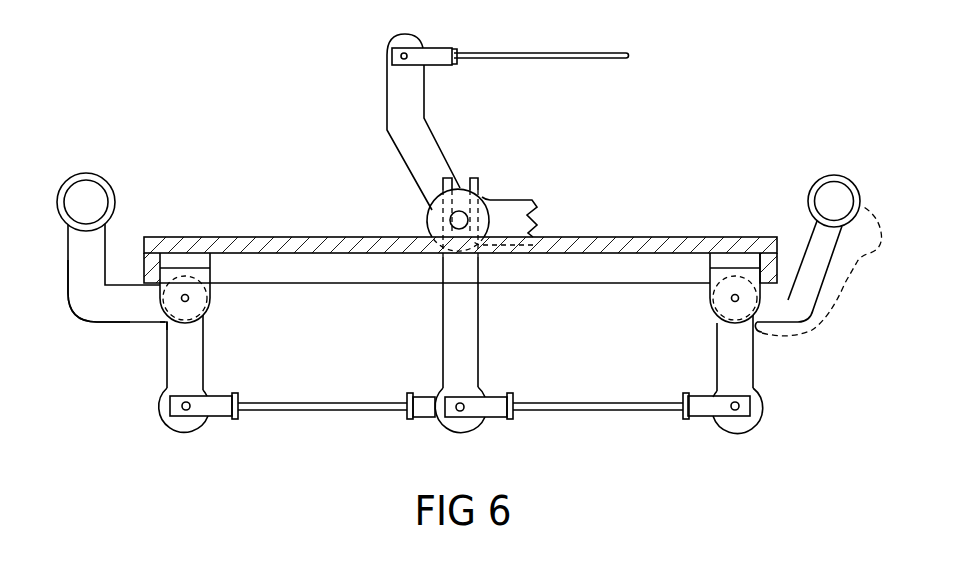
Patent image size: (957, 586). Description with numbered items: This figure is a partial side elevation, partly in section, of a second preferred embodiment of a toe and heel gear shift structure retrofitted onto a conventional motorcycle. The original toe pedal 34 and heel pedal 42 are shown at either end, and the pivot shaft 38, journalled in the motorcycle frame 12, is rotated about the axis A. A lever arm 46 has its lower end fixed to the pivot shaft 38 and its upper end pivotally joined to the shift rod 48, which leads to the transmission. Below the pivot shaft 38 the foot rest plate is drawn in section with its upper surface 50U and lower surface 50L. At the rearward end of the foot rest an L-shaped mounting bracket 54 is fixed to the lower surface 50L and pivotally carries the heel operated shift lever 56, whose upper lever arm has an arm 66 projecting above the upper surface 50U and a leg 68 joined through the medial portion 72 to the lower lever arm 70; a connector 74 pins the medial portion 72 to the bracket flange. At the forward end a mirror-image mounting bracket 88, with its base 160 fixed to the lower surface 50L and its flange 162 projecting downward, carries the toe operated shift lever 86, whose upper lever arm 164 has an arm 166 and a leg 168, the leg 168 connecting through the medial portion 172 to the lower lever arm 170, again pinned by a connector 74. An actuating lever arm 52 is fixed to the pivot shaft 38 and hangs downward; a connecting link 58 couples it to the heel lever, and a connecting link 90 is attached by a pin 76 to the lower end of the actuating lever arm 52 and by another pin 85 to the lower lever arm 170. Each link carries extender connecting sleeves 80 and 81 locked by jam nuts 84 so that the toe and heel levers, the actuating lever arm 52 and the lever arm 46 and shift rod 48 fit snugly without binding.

The motorcycle frame 12 is at (512, 200).
The toe pedal 34 is at (107, 188).
The pivot shaft 38 is at (460, 211).
The heel pedal 42 is at (812, 193).
The lever arm 46 is at (387, 108).
The shift rod 48 is at (530, 53).
The upper surface of foot rest 50U is at (546, 237).
The lower surface of foot rest 50L is at (565, 255).
The actuating lever arm 52 is at (465, 338).
The mounting bracket 54 is at (697, 267).
The heel operated shift lever 56 is at (786, 137).
The connecting link 58 is at (606, 422).
The arm of upper lever arm 66 is at (822, 240).
The leg of upper lever arm 68 is at (790, 292).
The lower lever arm 70 is at (737, 382).
The medial portion 72 is at (757, 344).
The connector 74 is at (188, 298).
The pin 76 is at (464, 407).
The connecting sleeve 80 is at (424, 412).
The connecting sleeve 81 is at (215, 417).
The jam nut 84 is at (235, 418).
The pin 85 is at (186, 410).
The toe operated shift lever 86 is at (120, 146).
The mounting bracket 88 is at (222, 265).
The connecting link 90 is at (305, 433).
The base 160 is at (177, 258).
The flange 162 is at (197, 273).
The upper lever arm 164 is at (128, 352).
The arm of upper lever arm 166 is at (88, 258).
The leg of upper lever arm 168 is at (102, 298).
The lower lever arm 170 is at (193, 371).
The medial portion 172 is at (162, 324).
The axis A is at (450, 220).